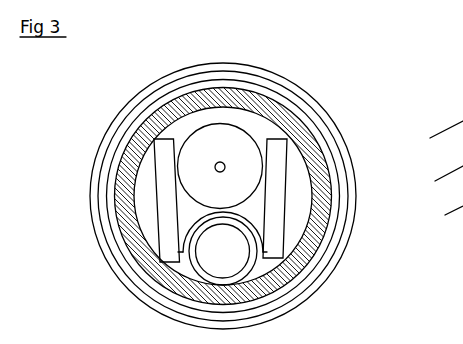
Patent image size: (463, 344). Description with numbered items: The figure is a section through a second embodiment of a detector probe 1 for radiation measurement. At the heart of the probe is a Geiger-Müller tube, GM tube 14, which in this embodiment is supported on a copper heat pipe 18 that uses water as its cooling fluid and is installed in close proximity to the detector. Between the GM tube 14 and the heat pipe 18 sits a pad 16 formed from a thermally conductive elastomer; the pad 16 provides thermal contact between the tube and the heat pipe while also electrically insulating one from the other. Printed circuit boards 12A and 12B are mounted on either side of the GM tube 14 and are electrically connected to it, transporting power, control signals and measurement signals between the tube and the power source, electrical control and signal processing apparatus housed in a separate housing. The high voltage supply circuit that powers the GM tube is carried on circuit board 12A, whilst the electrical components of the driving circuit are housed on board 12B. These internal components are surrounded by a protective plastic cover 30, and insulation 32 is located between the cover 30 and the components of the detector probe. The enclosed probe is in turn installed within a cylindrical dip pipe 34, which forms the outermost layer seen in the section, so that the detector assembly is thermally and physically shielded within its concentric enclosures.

The cable 1 is at (446, 204).
The printed circuit board 12A is at (160, 160).
The printed circuit board 12B is at (280, 142).
The GM tube 14 is at (205, 136).
The pad 16 is at (195, 219).
The heat pipe 18 is at (250, 260).
The protective plastic cover 30 is at (330, 234).
The insulation 32 is at (322, 190).
The dip pipe 34 is at (340, 143).